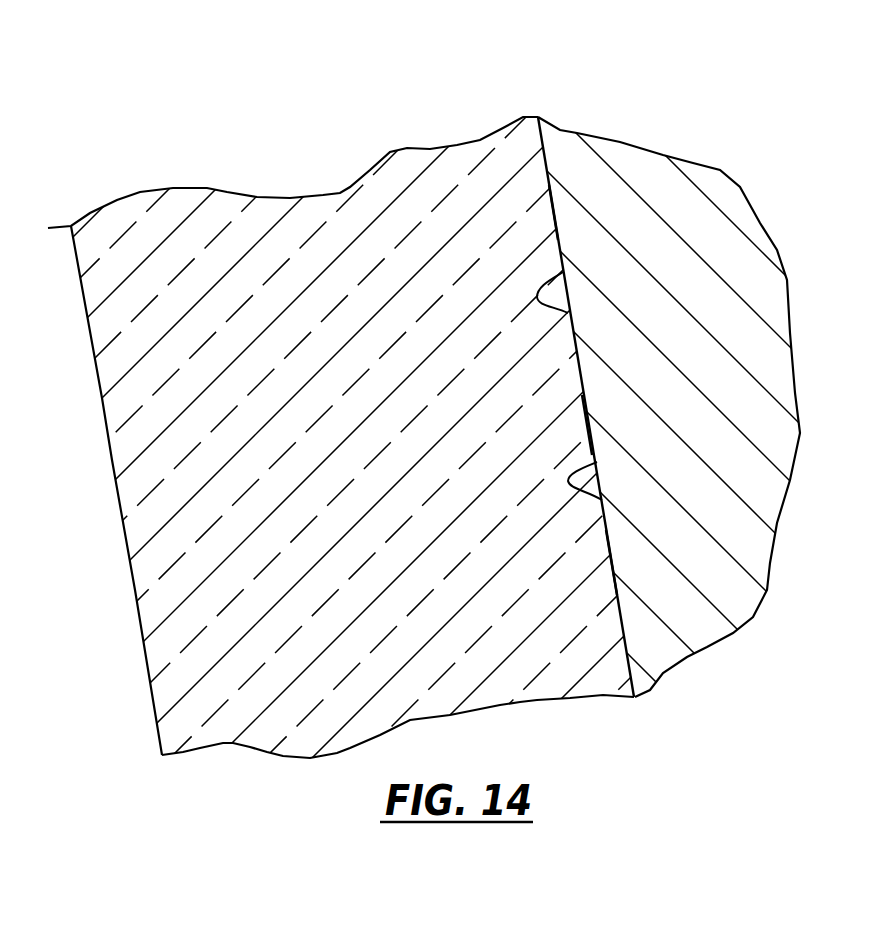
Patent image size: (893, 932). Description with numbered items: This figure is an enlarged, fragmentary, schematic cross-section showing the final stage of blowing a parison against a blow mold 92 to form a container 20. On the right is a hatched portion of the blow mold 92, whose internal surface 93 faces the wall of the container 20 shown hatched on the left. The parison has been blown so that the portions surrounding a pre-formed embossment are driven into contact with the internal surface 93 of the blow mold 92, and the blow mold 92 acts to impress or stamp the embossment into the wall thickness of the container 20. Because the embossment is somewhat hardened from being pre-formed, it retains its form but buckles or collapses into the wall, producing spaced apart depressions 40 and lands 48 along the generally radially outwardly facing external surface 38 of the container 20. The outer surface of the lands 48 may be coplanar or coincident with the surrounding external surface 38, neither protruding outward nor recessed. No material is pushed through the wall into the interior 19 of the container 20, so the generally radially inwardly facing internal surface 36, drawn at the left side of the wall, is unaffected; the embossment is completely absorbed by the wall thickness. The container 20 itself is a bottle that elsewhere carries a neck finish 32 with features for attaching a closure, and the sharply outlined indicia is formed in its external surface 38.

The interior 19 is at (64, 494).
The container 20 is at (517, 95).
The neck finish 32 is at (548, 673).
The internal surface 36 is at (127, 557).
The external surface 38 is at (553, 210).
The depressions 40 is at (562, 293).
The lands 48 is at (583, 380).
The blow mold 92 is at (655, 122).
The internal surface of the blow mold 93 is at (582, 400).